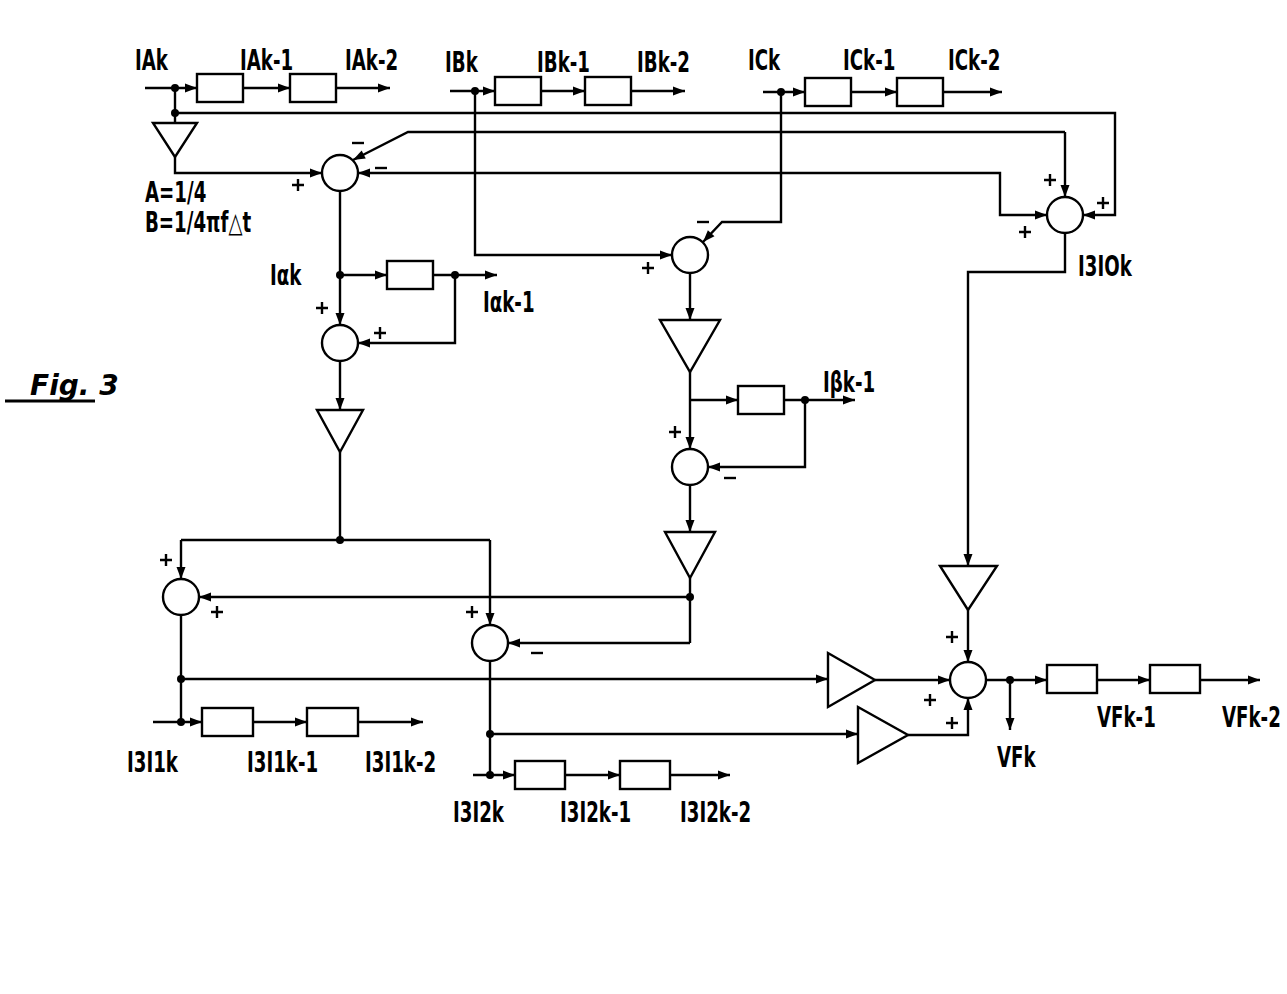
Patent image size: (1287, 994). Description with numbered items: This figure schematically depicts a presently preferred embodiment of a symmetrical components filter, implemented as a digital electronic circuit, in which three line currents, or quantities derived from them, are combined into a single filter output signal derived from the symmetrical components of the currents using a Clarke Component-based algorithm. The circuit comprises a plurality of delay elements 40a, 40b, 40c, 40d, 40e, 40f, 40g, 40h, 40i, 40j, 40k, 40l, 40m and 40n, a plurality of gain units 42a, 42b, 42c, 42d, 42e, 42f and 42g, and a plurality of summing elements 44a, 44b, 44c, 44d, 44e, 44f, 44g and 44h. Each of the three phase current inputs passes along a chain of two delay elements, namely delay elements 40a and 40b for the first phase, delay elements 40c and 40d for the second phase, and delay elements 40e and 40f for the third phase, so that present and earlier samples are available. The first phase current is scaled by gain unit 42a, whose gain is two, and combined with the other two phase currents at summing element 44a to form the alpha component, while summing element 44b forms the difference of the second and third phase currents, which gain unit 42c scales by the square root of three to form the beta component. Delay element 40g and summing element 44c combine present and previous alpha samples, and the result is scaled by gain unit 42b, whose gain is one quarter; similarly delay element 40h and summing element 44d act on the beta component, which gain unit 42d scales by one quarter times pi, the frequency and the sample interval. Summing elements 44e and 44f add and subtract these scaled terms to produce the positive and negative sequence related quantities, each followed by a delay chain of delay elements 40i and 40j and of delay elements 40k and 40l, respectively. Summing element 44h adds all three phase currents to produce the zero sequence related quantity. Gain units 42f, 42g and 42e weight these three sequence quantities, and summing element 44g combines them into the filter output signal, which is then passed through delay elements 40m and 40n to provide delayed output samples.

The delay element 40a is at (209, 74).
The delay element 40b is at (307, 74).
The delay element 40c is at (511, 77).
The delay element 40d is at (605, 77).
The delay element 40e is at (817, 78).
The delay element 40f is at (913, 78).
The delay element 40g is at (404, 261).
The delay element 40h is at (756, 386).
The delay element 40i is at (252, 712).
The delay element 40j is at (357, 712).
The delay element 40k is at (563, 772).
The delay element 40l is at (668, 772).
The delay element 40m is at (1073, 665).
The delay element 40n is at (1175, 655).
The gain unit 42a is at (188, 139).
The gain unit 42b is at (362, 421).
The gain unit 42c is at (718, 329).
The gain unit 42d is at (715, 544).
The gain unit 42e is at (986, 581).
The gain unit 42f is at (845, 656).
The gain unit 42g is at (893, 743).
The summing element 44a is at (327, 160).
The summing element 44b is at (678, 243).
The summing element 44c is at (322, 345).
The summing element 44d is at (672, 467).
The summing element 44e is at (163, 595).
The summing element 44f is at (472, 643).
The summing element 44g is at (981, 667).
The summing element 44h is at (1051, 202).